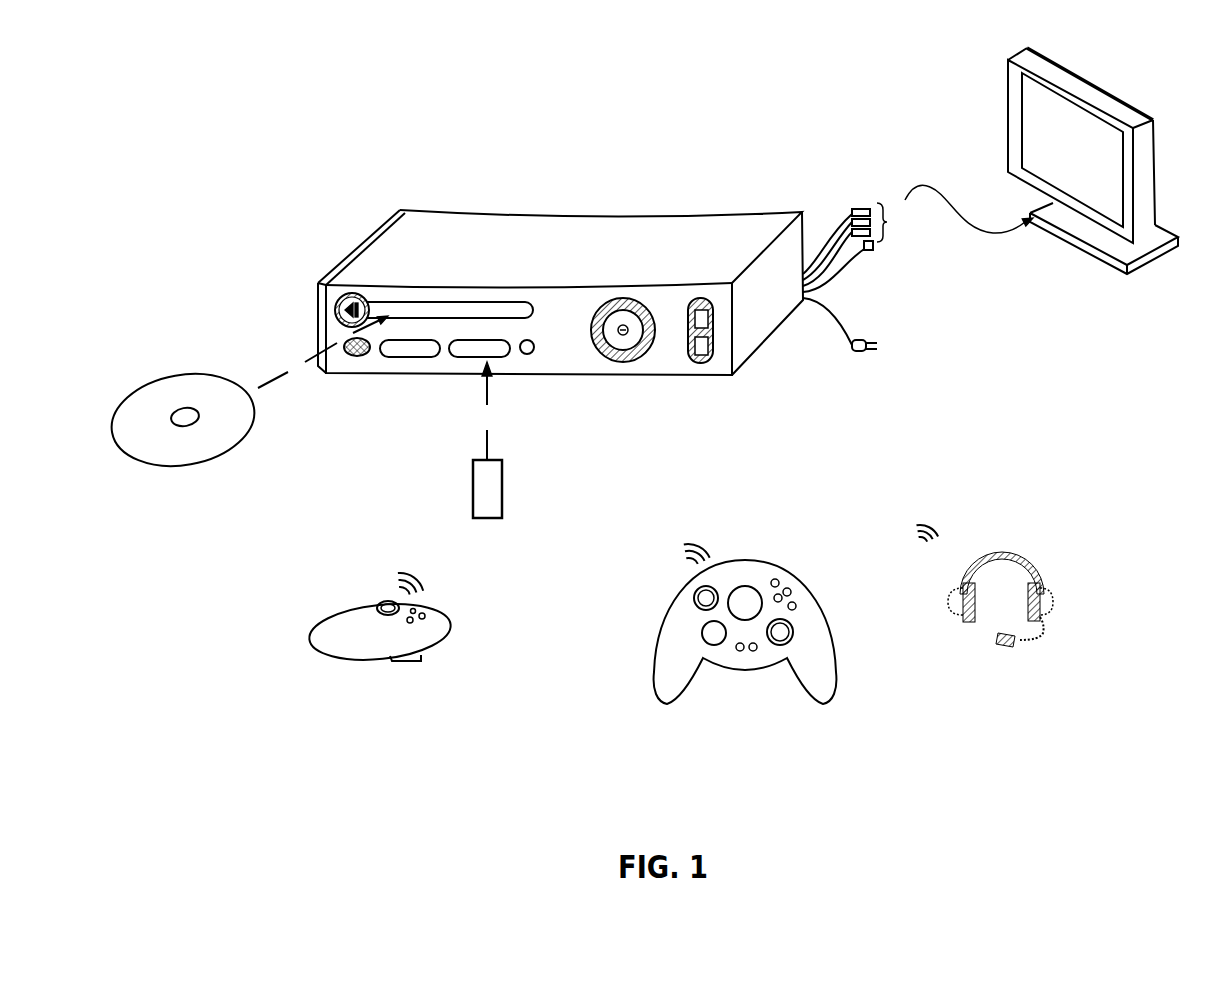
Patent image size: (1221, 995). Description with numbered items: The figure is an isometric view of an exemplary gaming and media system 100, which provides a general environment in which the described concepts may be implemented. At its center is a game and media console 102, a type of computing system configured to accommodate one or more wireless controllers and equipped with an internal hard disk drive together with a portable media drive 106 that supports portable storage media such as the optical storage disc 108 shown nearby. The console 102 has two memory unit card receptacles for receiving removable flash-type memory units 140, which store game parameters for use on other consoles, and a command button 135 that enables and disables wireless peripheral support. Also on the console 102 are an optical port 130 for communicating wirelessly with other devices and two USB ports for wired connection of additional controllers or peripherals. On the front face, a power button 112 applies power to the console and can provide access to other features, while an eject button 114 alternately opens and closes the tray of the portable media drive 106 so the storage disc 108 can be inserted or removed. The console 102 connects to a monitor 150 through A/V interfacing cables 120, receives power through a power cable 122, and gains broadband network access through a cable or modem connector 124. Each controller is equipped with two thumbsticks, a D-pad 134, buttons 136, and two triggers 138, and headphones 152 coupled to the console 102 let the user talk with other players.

The gaming and media system 100 is at (590, 176).
The game and media console 102 is at (430, 213).
The portable media drive 106 is at (458, 300).
The optical storage disc 108 is at (195, 463).
The power button 112 is at (623, 349).
The eject button 114 is at (346, 312).
The A/V interfacing cables 120 is at (858, 208).
The power cable 122 is at (856, 352).
The cable or modem connector 124 is at (868, 250).
The optical port 130 is at (357, 358).
The D-pad 134 is at (702, 633).
The command button 135 is at (527, 354).
The buttons 136 is at (791, 592).
The triggers 138 is at (420, 672).
The memory unit 140 is at (485, 518).
The monitor 150 is at (1008, 121).
The headphones 152 is at (1045, 565).